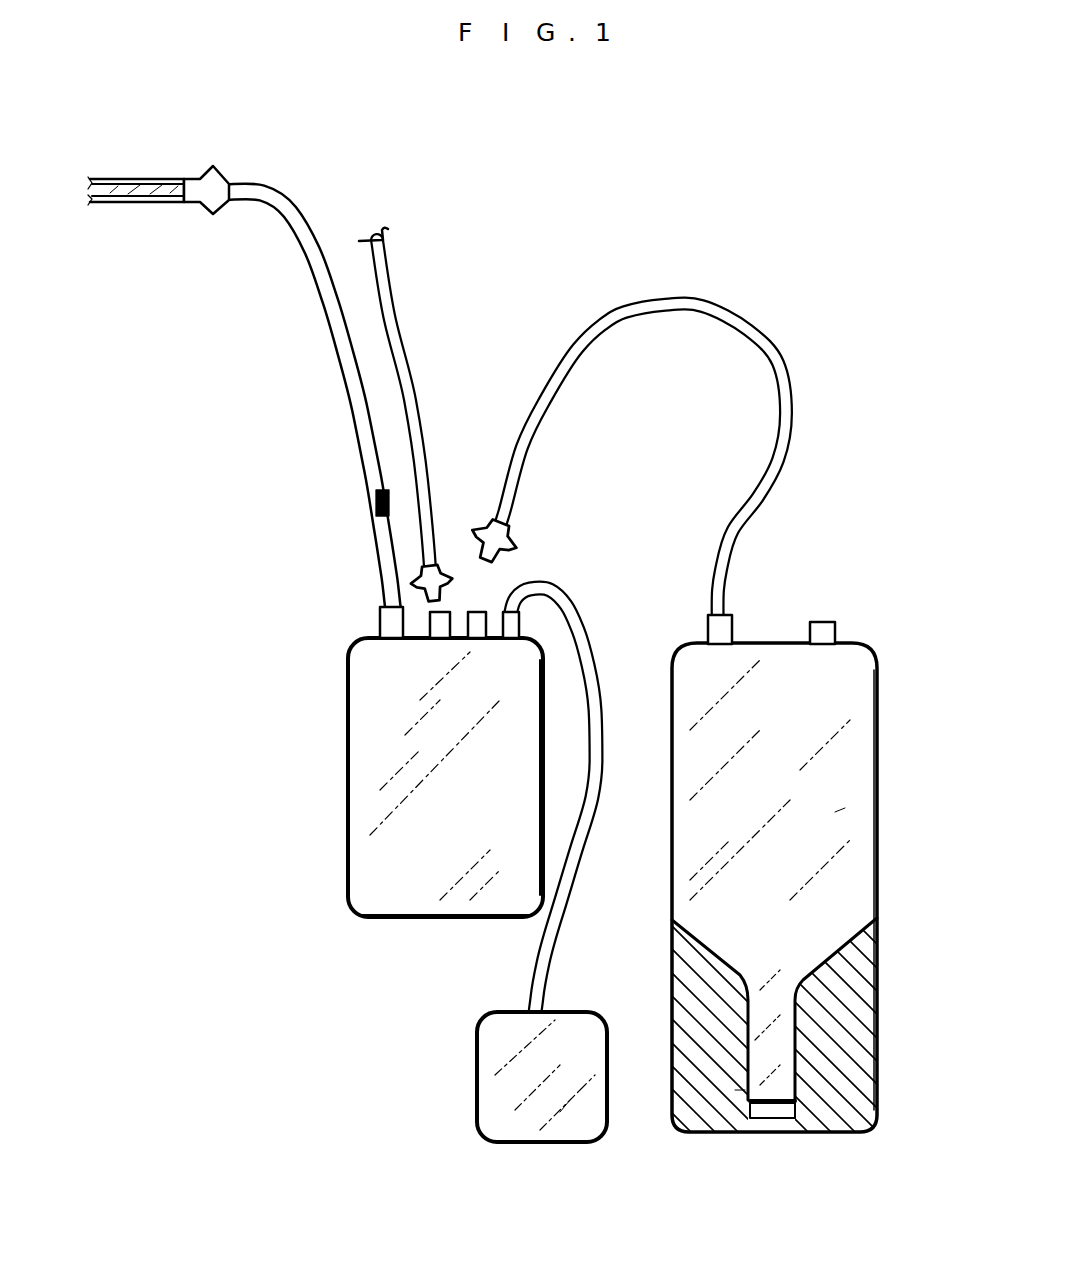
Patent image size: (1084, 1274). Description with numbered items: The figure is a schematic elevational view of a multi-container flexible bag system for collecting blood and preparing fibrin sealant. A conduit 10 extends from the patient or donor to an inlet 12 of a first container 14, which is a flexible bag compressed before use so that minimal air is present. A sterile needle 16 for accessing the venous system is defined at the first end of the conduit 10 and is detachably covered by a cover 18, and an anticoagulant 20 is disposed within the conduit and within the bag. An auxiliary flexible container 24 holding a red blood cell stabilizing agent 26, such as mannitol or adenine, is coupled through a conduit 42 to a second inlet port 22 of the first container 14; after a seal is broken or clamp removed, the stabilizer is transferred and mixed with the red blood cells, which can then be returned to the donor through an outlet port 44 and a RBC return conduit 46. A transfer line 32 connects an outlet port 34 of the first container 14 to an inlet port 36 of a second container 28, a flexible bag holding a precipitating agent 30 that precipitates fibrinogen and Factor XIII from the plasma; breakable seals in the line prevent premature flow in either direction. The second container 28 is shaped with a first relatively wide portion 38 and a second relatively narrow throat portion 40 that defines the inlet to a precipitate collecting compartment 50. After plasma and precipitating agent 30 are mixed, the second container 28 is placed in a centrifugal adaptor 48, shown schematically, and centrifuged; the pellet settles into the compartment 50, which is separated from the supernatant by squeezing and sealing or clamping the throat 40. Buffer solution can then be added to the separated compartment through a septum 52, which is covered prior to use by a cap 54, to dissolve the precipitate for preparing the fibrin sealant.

The conduit 10 is at (355, 399).
The inlet 12 is at (378, 617).
The first container 14 is at (362, 795).
The needle 16 is at (147, 190).
The cover 18 is at (150, 203).
The anticoagulant 20 is at (378, 503).
The second inlet port 22 is at (510, 628).
The auxiliary container 24 is at (580, 1013).
The red blood cell stabilizing agent 26 is at (570, 1108).
The second container 28 is at (838, 690).
The precipitating agent 30 is at (834, 814).
The transfer line 32 is at (778, 378).
The outlet port 34 is at (475, 634).
The inlet port 36 is at (706, 622).
The first relatively wide portion 38 is at (880, 742).
The throat portion 40 is at (800, 965).
The conduit 42 is at (592, 808).
The outlet port 44 is at (448, 614).
The RBC return conduit 46 is at (410, 332).
The centrifugal adaptor 48 is at (860, 1010).
The precipitate collecting compartment 50 is at (738, 1090).
The septum 52 is at (748, 1103).
The cap 54 is at (783, 1112).